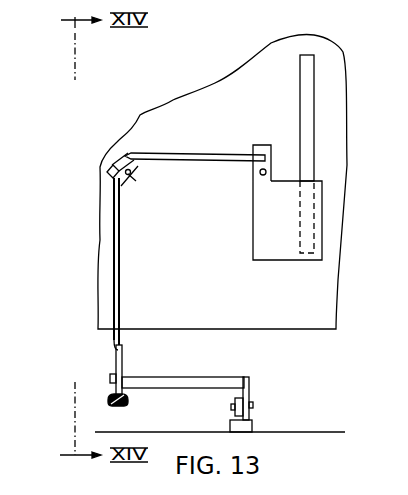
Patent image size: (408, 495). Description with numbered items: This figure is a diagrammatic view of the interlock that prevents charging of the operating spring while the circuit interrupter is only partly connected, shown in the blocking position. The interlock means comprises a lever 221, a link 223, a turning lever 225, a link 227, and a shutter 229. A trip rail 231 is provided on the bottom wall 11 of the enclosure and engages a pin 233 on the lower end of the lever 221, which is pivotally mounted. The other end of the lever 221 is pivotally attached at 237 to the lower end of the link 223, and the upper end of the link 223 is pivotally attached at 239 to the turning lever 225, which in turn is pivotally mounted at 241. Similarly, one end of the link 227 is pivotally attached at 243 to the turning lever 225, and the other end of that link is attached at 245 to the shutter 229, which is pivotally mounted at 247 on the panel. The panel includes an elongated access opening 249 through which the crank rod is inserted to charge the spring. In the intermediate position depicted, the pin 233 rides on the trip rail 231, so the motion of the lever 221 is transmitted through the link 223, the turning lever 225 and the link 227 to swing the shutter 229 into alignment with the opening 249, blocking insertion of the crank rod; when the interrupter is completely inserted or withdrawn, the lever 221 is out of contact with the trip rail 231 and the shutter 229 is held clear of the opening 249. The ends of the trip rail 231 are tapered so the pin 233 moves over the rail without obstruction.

The bottom wall 11 is at (189, 430).
The lever 221 is at (196, 380).
The link 223 is at (121, 235).
The turning lever 225 is at (148, 170).
The link 227 is at (229, 156).
The shutter 229 is at (264, 217).
The trip rail 231 is at (255, 425).
The pin 233 is at (251, 408).
The pivotal attachment point 237 is at (128, 352).
The pivotal attachment point 239 is at (106, 153).
The pivotal mounting point 241 is at (129, 180).
The pivotal attachment point 243 is at (141, 151).
The attachment point 245 is at (264, 145).
The pivotal mounting point 247 is at (260, 175).
The elongated access opening 249 is at (300, 72).